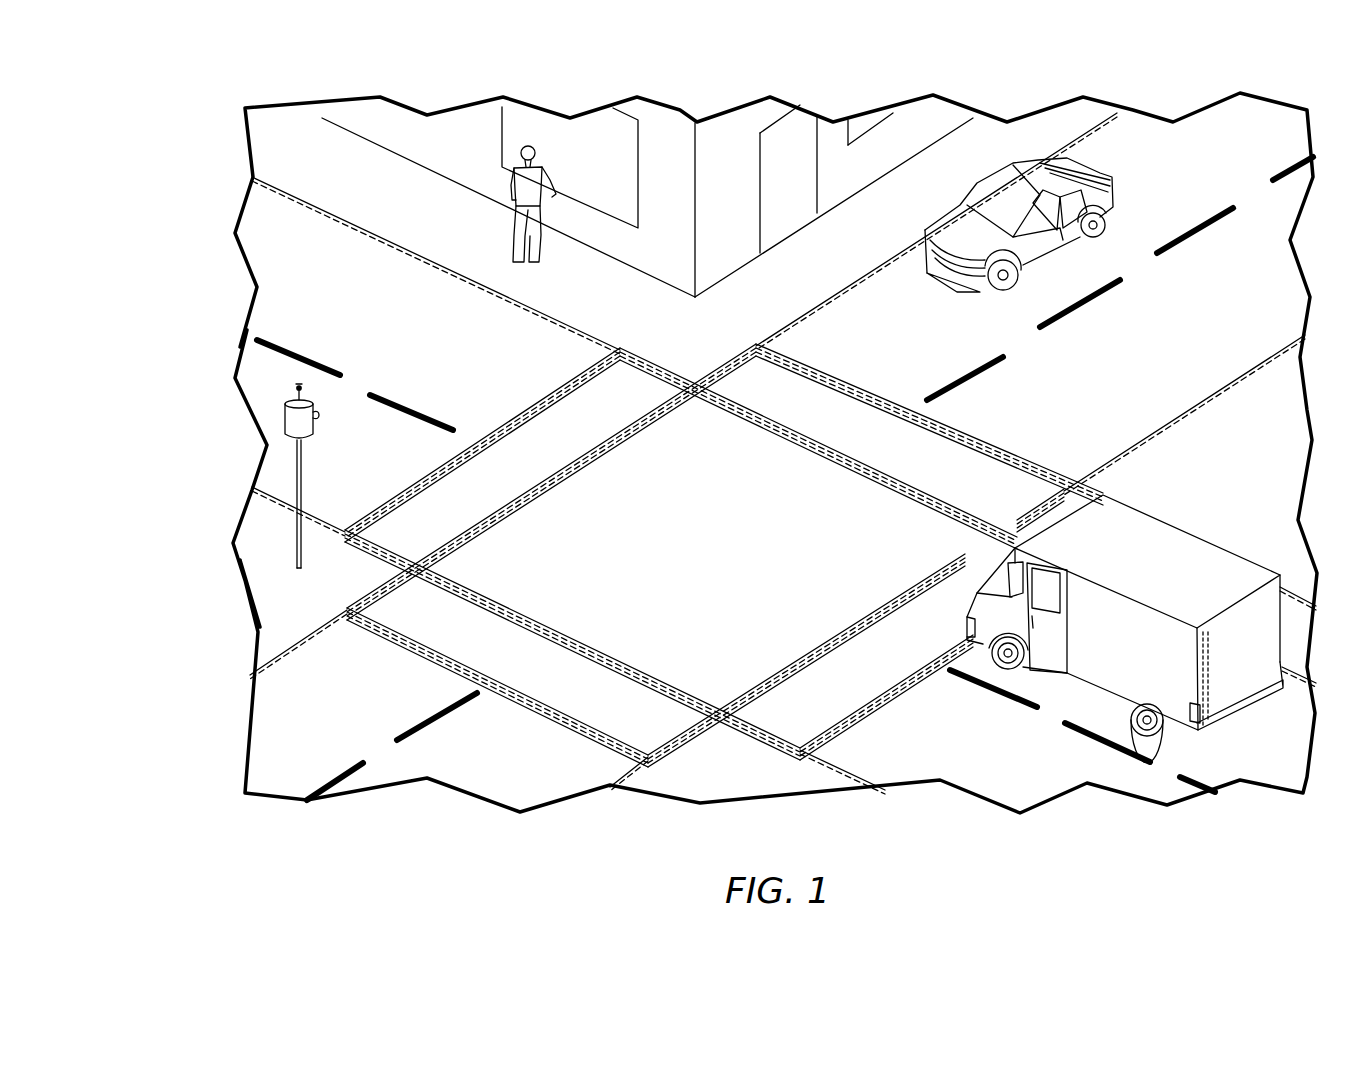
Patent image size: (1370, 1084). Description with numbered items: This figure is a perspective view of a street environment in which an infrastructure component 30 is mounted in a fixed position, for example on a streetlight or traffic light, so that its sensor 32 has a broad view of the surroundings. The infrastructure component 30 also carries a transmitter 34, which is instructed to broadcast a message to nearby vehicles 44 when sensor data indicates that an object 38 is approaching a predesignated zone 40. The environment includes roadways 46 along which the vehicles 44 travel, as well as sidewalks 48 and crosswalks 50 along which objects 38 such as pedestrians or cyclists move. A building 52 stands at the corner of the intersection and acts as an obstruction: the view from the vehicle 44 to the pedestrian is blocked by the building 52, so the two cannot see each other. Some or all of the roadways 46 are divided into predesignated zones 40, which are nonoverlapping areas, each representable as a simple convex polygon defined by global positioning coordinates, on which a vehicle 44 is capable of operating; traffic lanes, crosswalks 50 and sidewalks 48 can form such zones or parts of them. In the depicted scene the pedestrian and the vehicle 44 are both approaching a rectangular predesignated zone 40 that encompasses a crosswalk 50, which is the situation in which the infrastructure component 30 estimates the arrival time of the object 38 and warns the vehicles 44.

The infrastructure component 30 is at (297, 463).
The sensor 32 is at (319, 418).
The transmitter 34 is at (302, 392).
The object 38 is at (513, 237).
The predesignated zone 40 is at (354, 514).
The vehicle 44 is at (1113, 197).
The roadway 46 is at (1172, 351).
The sidewalk 48 is at (862, 252).
The crosswalk 50 is at (760, 387).
The building 52 is at (720, 250).